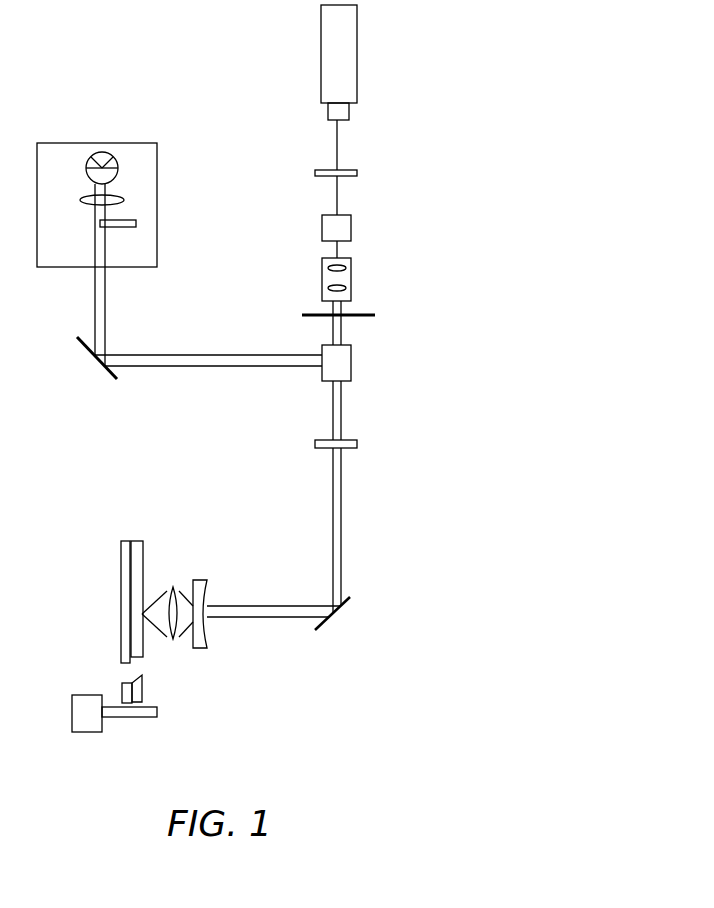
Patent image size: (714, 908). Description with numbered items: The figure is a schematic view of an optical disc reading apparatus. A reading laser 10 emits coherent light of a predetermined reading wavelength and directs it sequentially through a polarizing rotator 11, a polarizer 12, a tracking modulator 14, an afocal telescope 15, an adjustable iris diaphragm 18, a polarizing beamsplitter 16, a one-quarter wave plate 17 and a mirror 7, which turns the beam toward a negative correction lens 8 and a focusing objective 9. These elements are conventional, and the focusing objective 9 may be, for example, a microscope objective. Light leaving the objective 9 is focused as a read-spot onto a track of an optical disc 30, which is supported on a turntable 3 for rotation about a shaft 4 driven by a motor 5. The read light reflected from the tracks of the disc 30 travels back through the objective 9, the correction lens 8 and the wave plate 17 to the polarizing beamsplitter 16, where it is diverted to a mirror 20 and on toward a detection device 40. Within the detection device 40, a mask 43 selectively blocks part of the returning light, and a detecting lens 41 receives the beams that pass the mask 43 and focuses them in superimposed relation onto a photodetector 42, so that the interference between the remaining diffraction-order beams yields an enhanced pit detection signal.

The reading laser 10 is at (354, 27).
The polarizing rotator 11 is at (350, 112).
The polarizer 12 is at (358, 173).
The tracking modulator 14 is at (352, 236).
The afocal telescope 15 is at (352, 278).
The adjustable iris diaphragm 18 is at (374, 316).
The polarizing beamsplitter 16 is at (352, 364).
The one-quarter wave plate 17 is at (358, 448).
The mirror 7 is at (322, 626).
The mirror 20 is at (88, 350).
The detection device 40 is at (166, 174).
The photodetector 42 is at (110, 162).
The detecting lens 41 is at (124, 200).
The mask 43 is at (136, 223).
The turntable 3 is at (121, 561).
The optical disc 30 is at (142, 541).
The focusing objective 9 is at (172, 640).
The negative correction lens 8 is at (197, 648).
The shaft 4 is at (135, 718).
The motor 5 is at (86, 732).